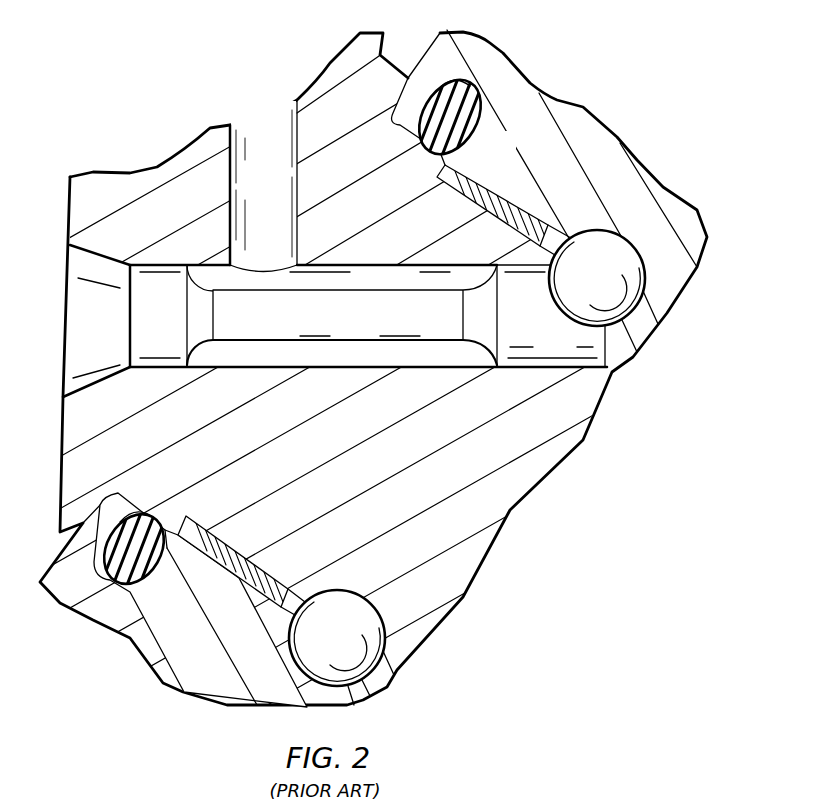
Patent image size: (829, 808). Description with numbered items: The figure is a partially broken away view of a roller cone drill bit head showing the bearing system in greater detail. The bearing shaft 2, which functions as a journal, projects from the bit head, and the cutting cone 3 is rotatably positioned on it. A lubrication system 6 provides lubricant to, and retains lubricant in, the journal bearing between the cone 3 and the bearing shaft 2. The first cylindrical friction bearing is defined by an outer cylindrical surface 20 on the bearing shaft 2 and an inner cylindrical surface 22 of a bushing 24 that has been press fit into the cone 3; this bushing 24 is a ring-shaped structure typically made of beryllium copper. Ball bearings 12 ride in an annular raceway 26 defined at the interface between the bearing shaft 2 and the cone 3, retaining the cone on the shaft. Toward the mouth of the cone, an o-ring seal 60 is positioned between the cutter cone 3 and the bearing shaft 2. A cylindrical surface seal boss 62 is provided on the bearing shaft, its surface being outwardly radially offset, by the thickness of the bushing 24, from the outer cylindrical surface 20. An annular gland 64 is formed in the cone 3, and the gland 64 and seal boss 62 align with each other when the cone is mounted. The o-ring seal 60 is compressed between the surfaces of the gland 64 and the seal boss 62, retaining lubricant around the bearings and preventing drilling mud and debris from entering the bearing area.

The bearing shaft 2 is at (435, 537).
The cutting cone 3 is at (598, 113).
The lubrication system 6 is at (262, 278).
The ball bearings 12 is at (572, 306).
The outer cylindrical surface 20 is at (488, 226).
The inner cylindrical surface 22 is at (542, 212).
The bushing 24 is at (465, 175).
The annular raceway 26 is at (625, 243).
The o-ring seal 60 is at (455, 88).
The seal boss 62 is at (421, 144).
The annular gland 64 is at (473, 72).